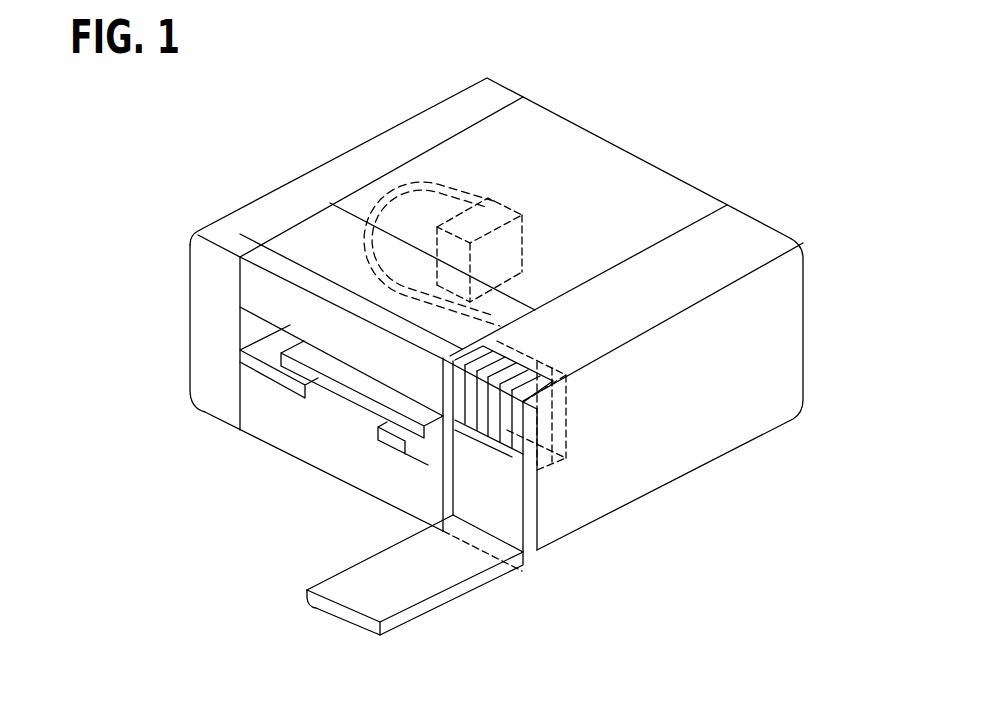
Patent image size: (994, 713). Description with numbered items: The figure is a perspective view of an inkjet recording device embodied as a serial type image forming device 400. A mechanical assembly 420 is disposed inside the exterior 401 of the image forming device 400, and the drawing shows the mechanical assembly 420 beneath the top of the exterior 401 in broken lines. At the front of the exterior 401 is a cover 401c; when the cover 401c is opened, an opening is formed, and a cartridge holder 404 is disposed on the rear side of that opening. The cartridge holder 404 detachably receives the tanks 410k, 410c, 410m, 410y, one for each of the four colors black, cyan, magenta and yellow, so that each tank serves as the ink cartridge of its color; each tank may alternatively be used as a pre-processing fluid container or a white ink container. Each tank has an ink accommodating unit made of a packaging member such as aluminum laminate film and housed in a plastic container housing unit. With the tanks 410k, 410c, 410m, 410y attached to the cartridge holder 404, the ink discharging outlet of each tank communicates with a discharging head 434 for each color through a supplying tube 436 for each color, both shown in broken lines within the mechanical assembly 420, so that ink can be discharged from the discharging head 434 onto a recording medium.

The image forming device 400 is at (730, 105).
The exterior 401 is at (301, 169).
The cover 401c is at (447, 595).
The mechanical assembly 420 is at (587, 204).
The discharging head 434 is at (489, 197).
The supplying tube 436 is at (396, 181).
The cartridge holder 404 is at (568, 421).
The tank 410k is at (472, 436).
The tank 410c is at (485, 448).
The tank 410m is at (497, 458).
The tank 410y is at (510, 467).